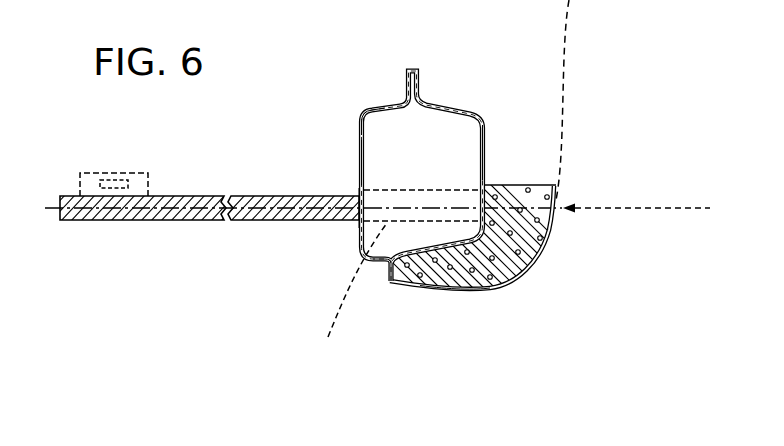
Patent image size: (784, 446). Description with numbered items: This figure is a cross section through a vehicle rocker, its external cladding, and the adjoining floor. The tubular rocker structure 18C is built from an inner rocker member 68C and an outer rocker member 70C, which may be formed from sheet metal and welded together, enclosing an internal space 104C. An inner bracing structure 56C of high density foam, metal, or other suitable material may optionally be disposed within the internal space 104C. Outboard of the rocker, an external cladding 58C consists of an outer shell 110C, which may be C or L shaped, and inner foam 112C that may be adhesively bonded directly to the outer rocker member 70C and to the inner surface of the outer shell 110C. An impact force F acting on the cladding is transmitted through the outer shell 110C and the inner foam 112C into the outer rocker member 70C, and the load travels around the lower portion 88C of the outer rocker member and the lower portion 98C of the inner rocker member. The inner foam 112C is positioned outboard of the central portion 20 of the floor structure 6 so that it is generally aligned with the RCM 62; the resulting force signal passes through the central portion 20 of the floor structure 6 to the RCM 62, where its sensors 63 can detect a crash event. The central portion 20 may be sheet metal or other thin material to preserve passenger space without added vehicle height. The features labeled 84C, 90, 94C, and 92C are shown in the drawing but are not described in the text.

The floor structure 6 is at (260, 220).
The central portion 20 is at (288, 220).
The RCM 62 is at (117, 172).
The sensors 63 is at (128, 182).
The tubular rocker structure 18C is at (451, 105).
The inner rocker member 68C is at (358, 126).
The side wall 84C is at (360, 172).
The junction 90 is at (357, 192).
The internal space 104C is at (442, 164).
The outer rocker member 70C is at (487, 132).
The wall portion 94C is at (487, 167).
The inner foam 112C is at (527, 186).
The outer shell 110C is at (546, 234).
The external cladding 58C is at (517, 281).
The lower portion of outer rocker member 88C is at (453, 289).
The lower portion of inner rocker member 98C is at (377, 264).
The inner bracing structure 56C is at (347, 295).
The impact force F is at (595, 207).
The axis 92C is at (670, 207).